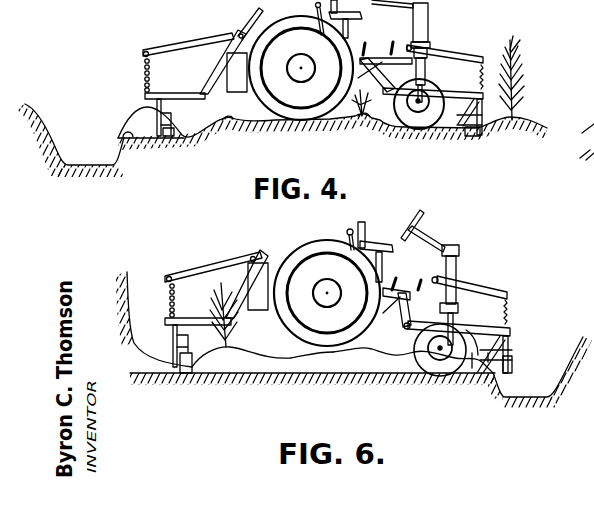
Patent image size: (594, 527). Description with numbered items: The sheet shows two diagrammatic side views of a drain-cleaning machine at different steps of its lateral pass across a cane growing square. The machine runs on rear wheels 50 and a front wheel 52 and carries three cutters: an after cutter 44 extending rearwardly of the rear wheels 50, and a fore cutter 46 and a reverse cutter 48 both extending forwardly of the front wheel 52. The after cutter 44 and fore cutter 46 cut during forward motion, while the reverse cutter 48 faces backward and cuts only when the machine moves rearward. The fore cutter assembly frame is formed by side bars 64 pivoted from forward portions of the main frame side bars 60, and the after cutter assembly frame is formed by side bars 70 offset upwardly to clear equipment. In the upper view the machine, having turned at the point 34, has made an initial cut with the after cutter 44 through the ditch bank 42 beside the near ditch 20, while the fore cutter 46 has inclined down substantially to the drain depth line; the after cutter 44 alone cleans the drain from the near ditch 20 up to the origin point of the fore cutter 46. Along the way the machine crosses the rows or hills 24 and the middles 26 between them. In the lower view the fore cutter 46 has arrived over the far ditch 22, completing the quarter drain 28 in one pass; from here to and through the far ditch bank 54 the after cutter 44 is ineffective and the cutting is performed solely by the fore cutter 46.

In FIG. 4, the near draining ditch 20 is at (90, 160).
In FIG. 6, the far draining ditch 22 is at (525, 392).
In FIG. 4, the rows of growing cane 24 is at (382, 123).
In FIG. 4, the middles 26 is at (228, 120).
In FIG. 6, the middles 26 is at (397, 357).
In FIG. 4, the quarter drain 28 is at (123, 134).
In FIG. 6, the quarter drain 28 is at (343, 363).
In FIG. 6, the turn point 34 is at (244, 346).
In FIG. 4, the ditch bank 42 is at (138, 122).
In FIG. 4, the after cutter 44 is at (164, 138).
In FIG. 6, the after cutter 44 is at (187, 374).
In FIG. 4, the fore cutter 46 is at (481, 138).
In FIG. 6, the fore cutter 46 is at (505, 352).
In FIG. 6, the reverse cutter 48 is at (510, 374).
In FIG. 4, the rear wheels 50 is at (312, 116).
In FIG. 6, the rear wheels 50 is at (322, 249).
In FIG. 6, the front wheel 52 is at (437, 364).
In FIG. 6, the far ditch bank 54 is at (472, 362).
In FIG. 4, the main frame side bars 60 is at (361, 62).
In FIG. 6, the main frame side bars 60 is at (397, 292).
In FIG. 4, the fore cutter assembly side bars 64 is at (463, 91).
In FIG. 4, the after cutter assembly side bars 70 is at (255, 21).
In FIG. 6, the after cutter assembly side bars 70 is at (268, 262).